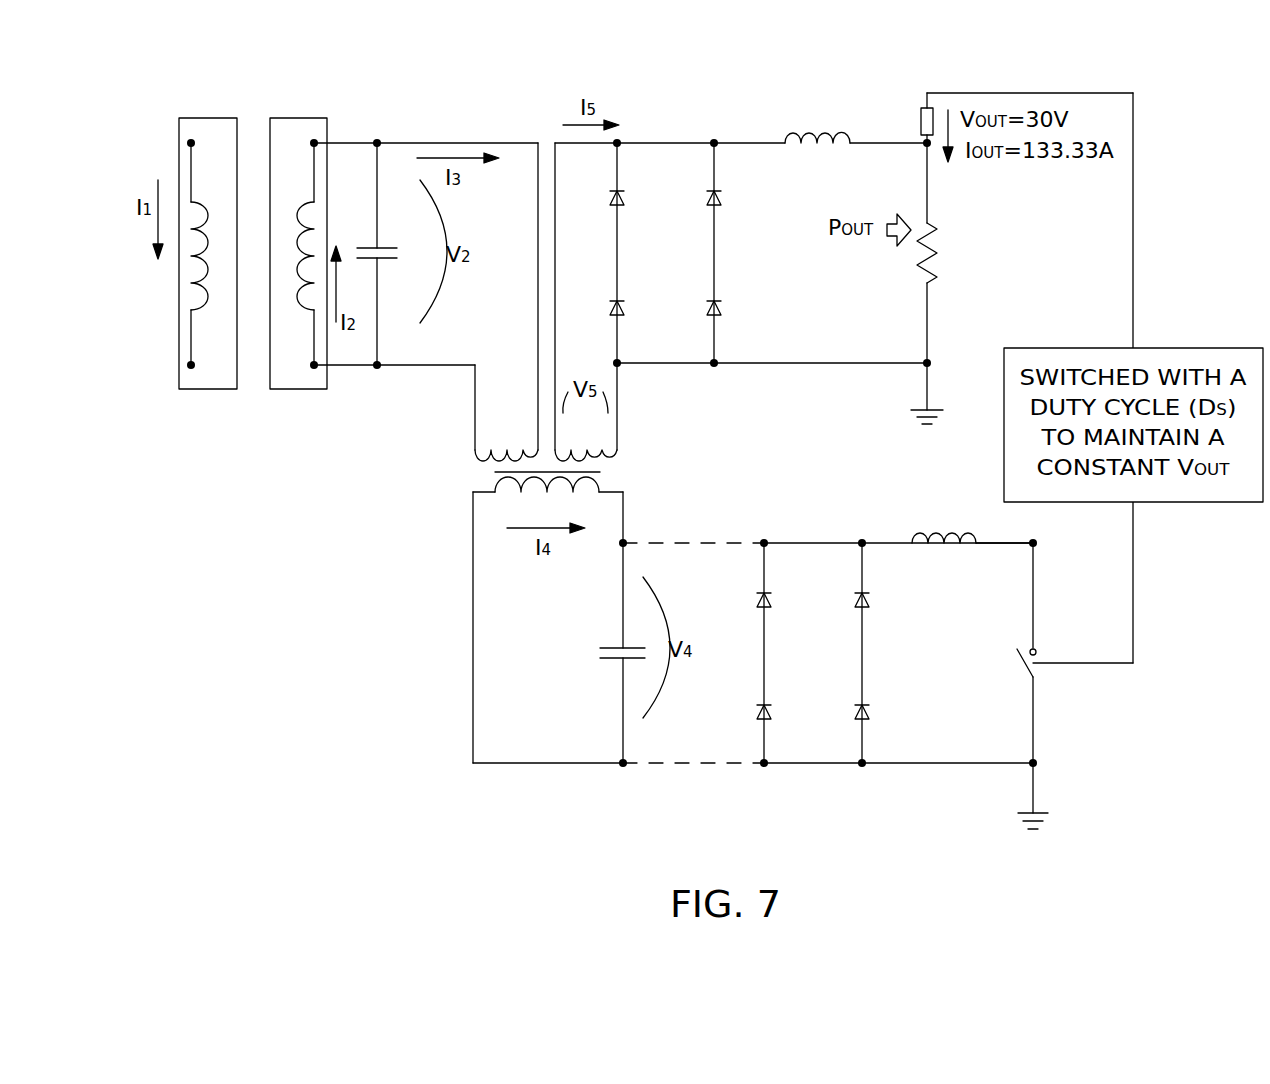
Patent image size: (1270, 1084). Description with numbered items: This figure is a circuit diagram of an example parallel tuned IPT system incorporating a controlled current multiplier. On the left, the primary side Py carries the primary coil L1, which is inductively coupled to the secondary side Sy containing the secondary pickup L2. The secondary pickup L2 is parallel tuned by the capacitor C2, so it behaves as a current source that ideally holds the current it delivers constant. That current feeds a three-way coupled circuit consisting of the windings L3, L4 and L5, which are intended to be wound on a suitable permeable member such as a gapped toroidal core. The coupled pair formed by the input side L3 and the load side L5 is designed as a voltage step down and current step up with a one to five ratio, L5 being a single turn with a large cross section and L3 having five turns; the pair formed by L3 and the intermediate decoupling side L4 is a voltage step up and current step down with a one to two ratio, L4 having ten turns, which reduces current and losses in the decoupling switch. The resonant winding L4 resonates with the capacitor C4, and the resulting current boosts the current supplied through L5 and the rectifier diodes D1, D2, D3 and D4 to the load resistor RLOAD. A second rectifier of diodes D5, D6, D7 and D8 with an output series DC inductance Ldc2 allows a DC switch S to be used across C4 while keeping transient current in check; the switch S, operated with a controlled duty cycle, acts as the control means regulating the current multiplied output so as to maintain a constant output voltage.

The primary winding section Py is at (208, 234).
The secondary winding section Sy is at (298, 234).
The primary inductor L1 is at (210, 254).
The secondary pickup L2 is at (295, 254).
The resonant capacitor C2 is at (393, 254).
The input side coil L3 is at (506, 302).
The resonant winding L4 is at (548, 497).
The load side coil L5 is at (586, 302).
The rectifier diode D1 is at (638, 199).
The rectifier diode D2 is at (638, 312).
The rectifier diode D3 is at (731, 199).
The rectifier diode D4 is at (731, 314).
The rectifier diode D5 is at (782, 600).
The rectifier diode D6 is at (782, 712).
The rectifier diode D7 is at (880, 600).
The rectifier diode D8 is at (880, 712).
The resonant capacitor C4 is at (601, 629).
The output series DC inductance Ldc2 is at (972, 522).
The load resistor RLOAD is at (959, 253).
The switch S is at (1036, 653).